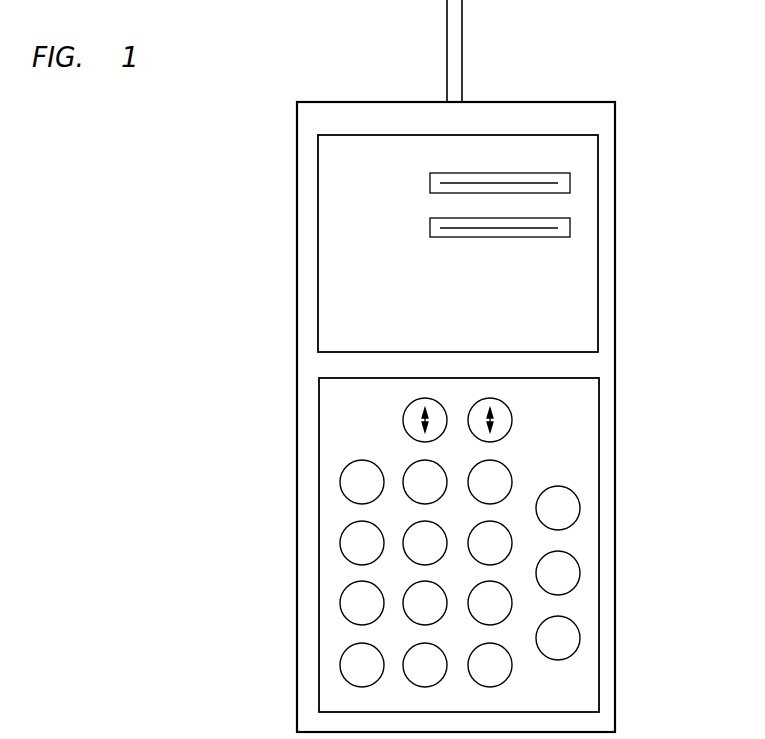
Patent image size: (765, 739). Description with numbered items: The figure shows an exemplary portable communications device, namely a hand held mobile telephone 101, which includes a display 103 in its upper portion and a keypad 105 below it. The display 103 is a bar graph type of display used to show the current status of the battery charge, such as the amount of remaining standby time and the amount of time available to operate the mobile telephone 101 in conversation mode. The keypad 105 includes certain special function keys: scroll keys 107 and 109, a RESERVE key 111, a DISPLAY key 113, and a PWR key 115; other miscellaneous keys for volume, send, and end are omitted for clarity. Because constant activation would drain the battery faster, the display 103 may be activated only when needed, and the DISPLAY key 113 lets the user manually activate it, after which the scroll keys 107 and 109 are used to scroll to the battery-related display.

The hand held mobile telephone 101 is at (297, 273).
The display 103 is at (598, 262).
The keypad 105 is at (330, 523).
The scroll key 107 is at (403, 415).
The scroll key 109 is at (510, 409).
The RESERVE key 111 is at (580, 507).
The DISPLAY key 113 is at (580, 572).
The PWR key 115 is at (580, 637).